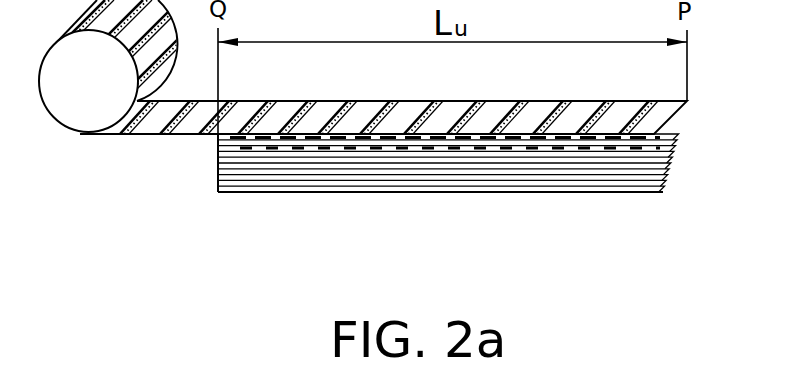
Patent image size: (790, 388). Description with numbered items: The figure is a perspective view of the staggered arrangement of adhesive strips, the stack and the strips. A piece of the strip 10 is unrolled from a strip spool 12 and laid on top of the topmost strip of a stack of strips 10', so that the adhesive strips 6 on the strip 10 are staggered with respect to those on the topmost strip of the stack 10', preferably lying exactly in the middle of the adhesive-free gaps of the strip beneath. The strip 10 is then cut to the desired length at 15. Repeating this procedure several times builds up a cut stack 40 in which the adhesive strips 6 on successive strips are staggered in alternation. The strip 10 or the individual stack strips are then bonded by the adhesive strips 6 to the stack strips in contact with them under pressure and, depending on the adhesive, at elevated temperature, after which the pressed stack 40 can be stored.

The strip 10 is at (389, 135).
The strip spool 12 is at (64, 108).
The cut location 15 is at (250, 140).
The cut stack 40 is at (448, 210).
The adhesive strips 6 is at (481, 135).
The stack of strips 10' is at (445, 205).